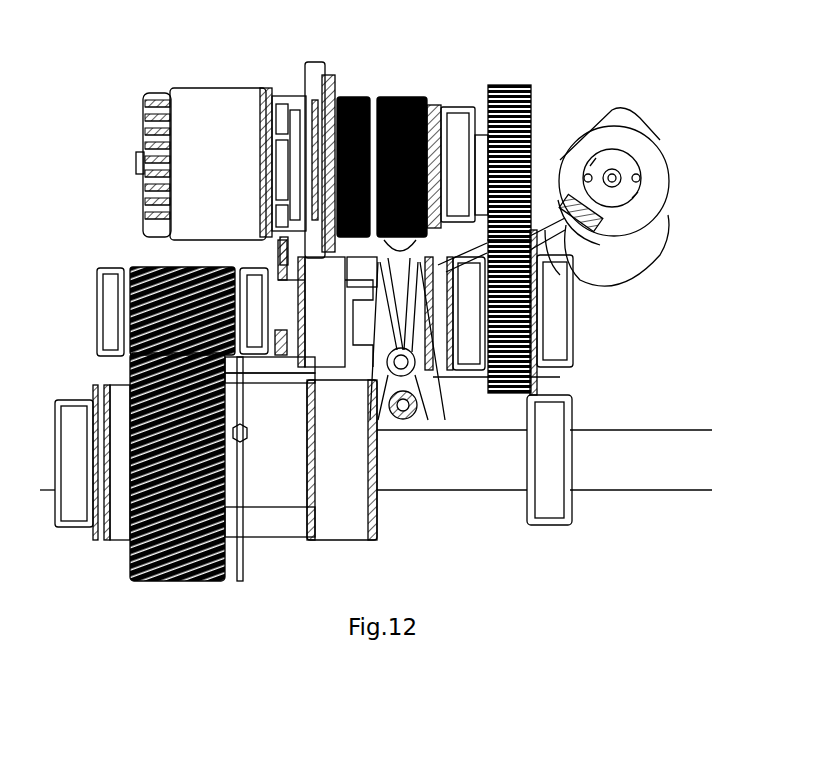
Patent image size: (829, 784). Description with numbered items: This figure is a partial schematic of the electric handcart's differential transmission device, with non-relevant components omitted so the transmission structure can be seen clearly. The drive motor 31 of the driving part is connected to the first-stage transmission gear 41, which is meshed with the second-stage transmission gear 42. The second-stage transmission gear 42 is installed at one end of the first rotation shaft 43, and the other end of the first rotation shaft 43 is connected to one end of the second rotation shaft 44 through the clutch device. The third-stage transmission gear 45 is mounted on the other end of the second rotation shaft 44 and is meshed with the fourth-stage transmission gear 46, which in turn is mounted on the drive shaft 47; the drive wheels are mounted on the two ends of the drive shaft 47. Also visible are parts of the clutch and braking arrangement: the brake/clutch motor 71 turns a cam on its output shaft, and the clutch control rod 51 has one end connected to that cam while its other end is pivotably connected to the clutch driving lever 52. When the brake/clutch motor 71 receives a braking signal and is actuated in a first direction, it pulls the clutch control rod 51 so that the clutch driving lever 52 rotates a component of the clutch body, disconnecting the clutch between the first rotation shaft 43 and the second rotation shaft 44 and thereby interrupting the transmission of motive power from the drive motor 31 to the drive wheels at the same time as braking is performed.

The drive motor 31 is at (185, 134).
The first-stage transmission gear 41 is at (532, 92).
The second-stage transmission gear 42 is at (533, 312).
The first rotation shaft 43 is at (533, 372).
The second rotation shaft 44 is at (217, 272).
The third-stage transmission gear 45 is at (112, 288).
The fourth-stage transmission gear 46 is at (113, 386).
The drive shaft 47 is at (447, 482).
The clutch control rod 51 is at (620, 123).
The clutch driving lever 52 is at (430, 404).
The brake/clutch motor 71 is at (650, 163).